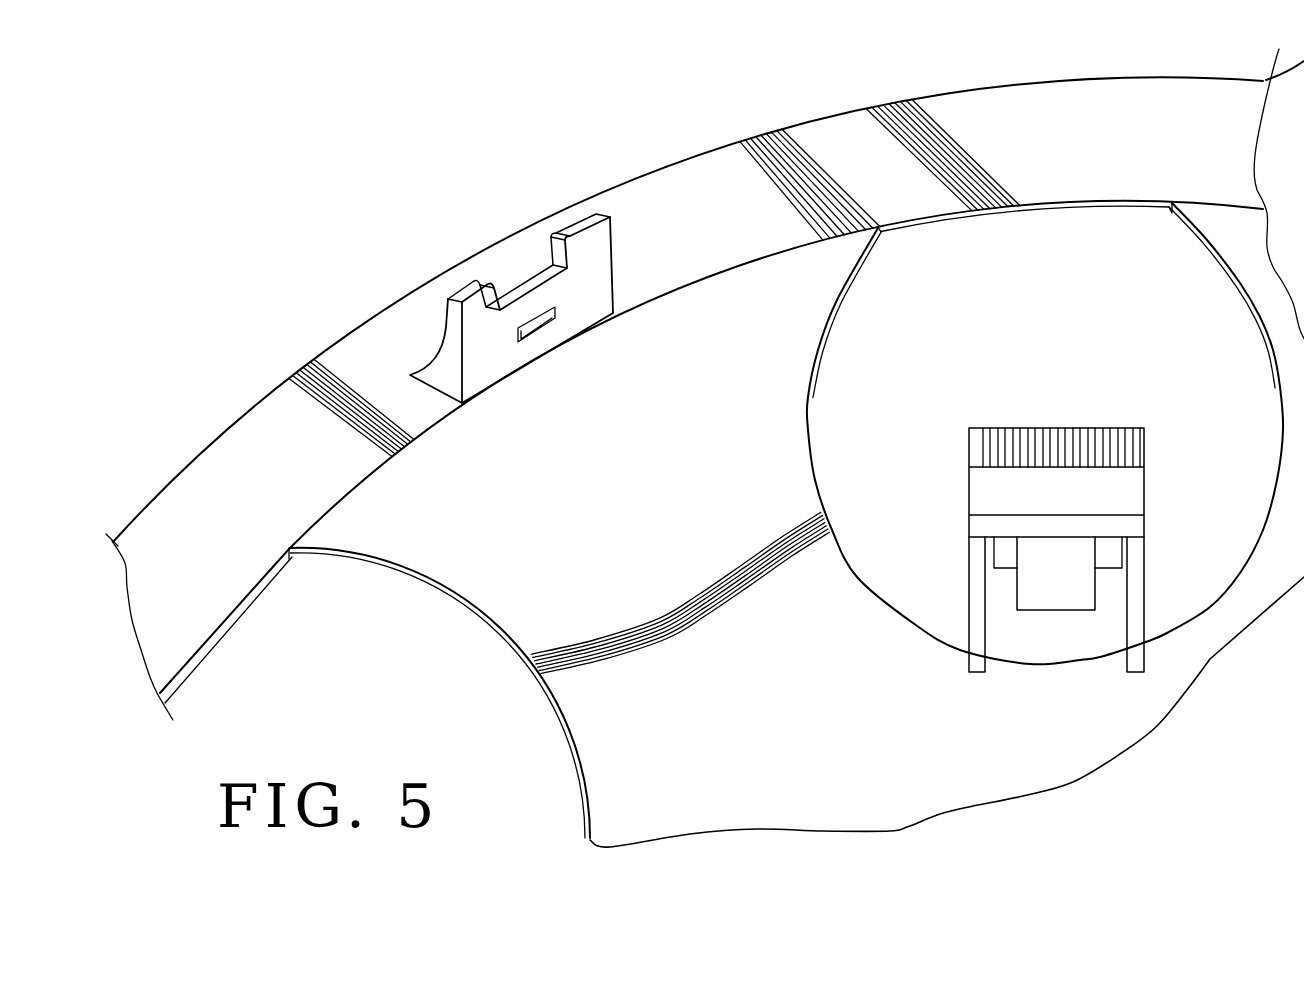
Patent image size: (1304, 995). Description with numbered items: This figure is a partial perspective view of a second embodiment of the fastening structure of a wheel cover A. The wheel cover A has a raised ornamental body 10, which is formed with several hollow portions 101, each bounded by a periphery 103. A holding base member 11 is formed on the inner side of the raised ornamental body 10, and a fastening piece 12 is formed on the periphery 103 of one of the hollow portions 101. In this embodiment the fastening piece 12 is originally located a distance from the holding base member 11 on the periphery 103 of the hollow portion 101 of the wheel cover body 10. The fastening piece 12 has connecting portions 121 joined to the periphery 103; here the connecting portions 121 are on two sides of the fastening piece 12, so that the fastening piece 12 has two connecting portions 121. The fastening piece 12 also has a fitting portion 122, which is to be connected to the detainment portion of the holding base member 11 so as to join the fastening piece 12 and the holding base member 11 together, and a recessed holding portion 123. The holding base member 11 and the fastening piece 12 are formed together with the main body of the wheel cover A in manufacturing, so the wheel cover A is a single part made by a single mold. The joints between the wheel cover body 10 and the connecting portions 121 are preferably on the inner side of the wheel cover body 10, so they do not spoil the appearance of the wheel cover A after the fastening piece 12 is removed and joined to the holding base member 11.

The raised ornamental body 10 is at (580, 813).
The hollow portions 101 is at (1020, 287).
The peripheries 103 is at (920, 225).
The holding base member 11 is at (595, 278).
The fastening piece 12 is at (1120, 498).
The connecting portion 121 is at (980, 623).
The fitting portion 122 is at (1078, 432).
The recessed holding portion 123 is at (1047, 578).
The wheel cover A is at (715, 163).